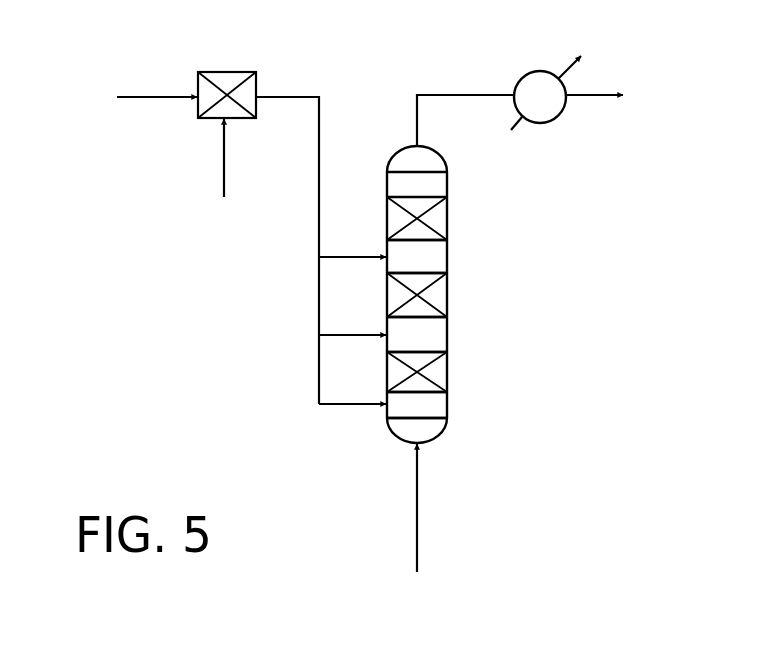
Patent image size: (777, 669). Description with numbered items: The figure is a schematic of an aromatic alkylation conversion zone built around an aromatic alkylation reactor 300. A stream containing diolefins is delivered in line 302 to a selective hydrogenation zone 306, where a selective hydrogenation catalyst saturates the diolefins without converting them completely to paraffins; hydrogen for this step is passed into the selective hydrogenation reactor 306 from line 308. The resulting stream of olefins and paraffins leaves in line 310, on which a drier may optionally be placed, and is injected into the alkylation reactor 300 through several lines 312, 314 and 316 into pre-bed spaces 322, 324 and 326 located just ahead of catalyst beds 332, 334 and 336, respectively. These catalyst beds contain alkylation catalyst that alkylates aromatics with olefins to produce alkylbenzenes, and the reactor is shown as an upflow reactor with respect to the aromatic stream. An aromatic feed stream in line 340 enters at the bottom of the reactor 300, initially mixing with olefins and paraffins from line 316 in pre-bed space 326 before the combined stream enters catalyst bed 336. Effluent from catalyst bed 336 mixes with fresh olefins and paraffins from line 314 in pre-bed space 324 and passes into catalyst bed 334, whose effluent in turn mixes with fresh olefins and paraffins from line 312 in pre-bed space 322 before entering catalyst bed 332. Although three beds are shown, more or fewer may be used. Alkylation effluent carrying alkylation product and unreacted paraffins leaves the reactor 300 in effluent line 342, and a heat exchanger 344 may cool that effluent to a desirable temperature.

The aromatic alkylation reactor 300 is at (448, 188).
The line 302 is at (150, 97).
The selective hydrogenation zone 306 is at (257, 105).
The hydrogen line 308 is at (222, 155).
The olefin and paraffin line 310 is at (292, 97).
The injection line 312 is at (338, 256).
The injection line 314 is at (338, 334).
The injection line 316 is at (338, 403).
The pre-bed space 322 is at (433, 262).
The pre-bed space 324 is at (432, 333).
The pre-bed space 326 is at (432, 402).
The catalyst bed 332 is at (397, 219).
The catalyst bed 334 is at (397, 293).
The catalyst bed 336 is at (397, 372).
The aromatic feed line 340 is at (416, 505).
The effluent line 342 is at (435, 95).
The heat exchanger 344 is at (567, 112).